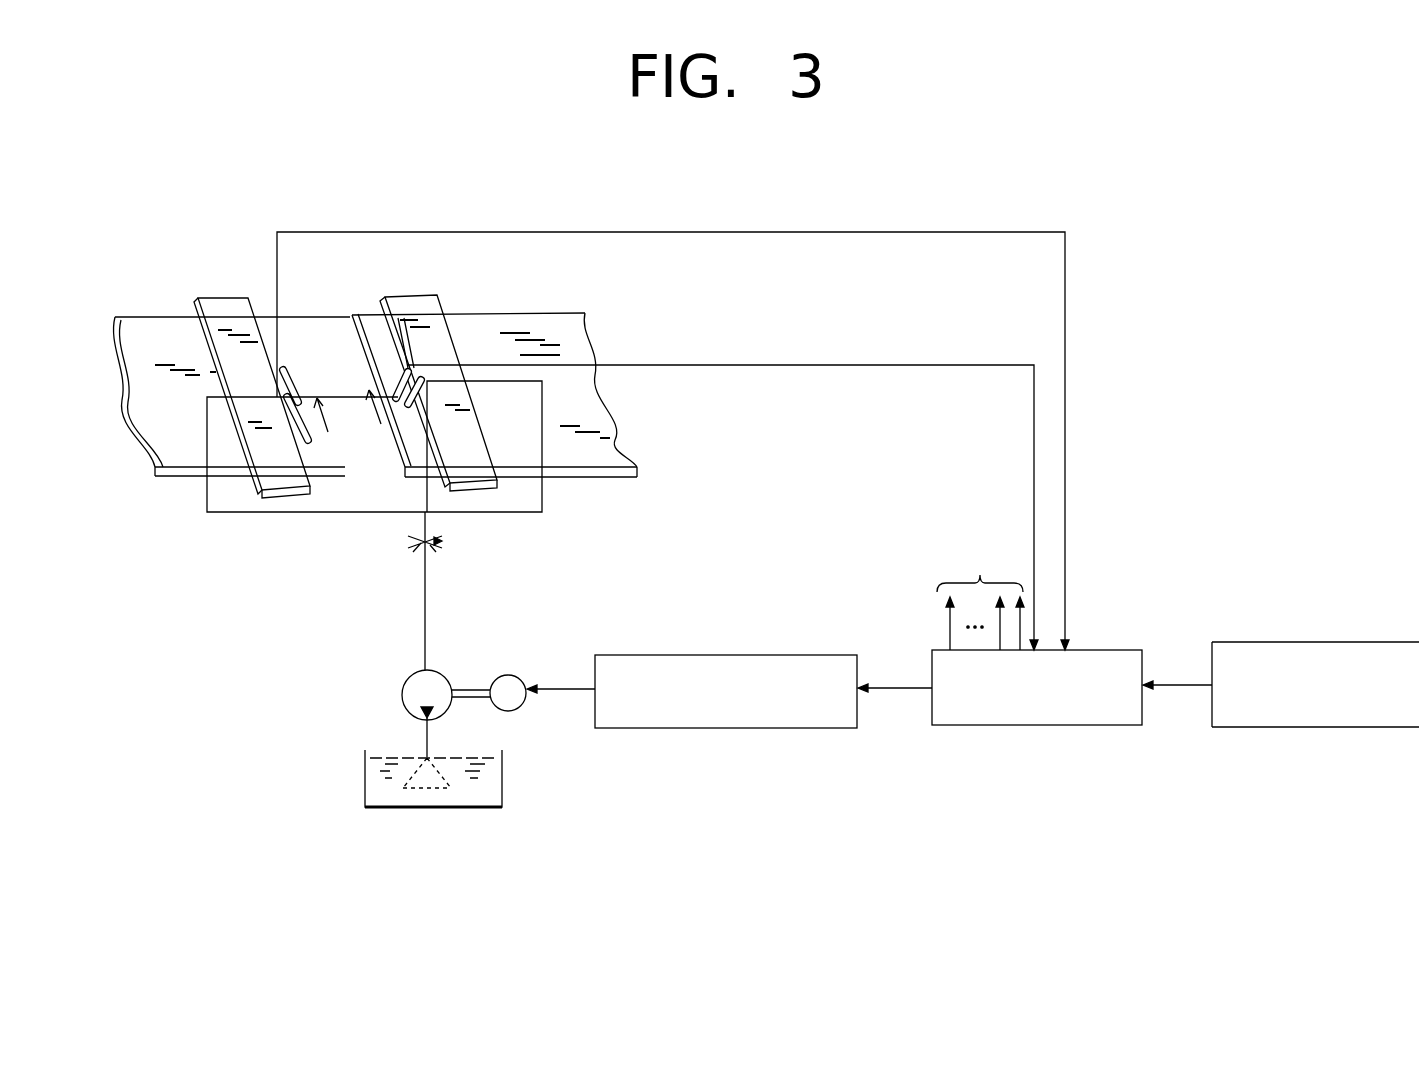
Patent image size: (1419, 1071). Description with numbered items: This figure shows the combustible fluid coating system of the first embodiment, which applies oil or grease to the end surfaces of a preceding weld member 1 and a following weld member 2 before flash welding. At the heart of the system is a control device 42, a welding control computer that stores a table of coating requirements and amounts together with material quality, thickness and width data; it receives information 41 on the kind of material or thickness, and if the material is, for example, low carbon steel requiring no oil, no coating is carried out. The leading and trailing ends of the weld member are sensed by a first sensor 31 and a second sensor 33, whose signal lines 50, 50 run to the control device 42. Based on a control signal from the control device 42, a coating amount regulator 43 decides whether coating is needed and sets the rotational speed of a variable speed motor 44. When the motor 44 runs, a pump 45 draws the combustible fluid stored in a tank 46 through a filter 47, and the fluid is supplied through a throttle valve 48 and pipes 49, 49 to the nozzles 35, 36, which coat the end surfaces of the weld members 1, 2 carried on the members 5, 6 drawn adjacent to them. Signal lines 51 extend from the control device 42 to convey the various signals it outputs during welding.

The preceding weld member 1 is at (562, 313).
The following weld member 2 is at (152, 317).
The first coating bar 5 is at (412, 297).
The second coating bar 6 is at (222, 298).
The first sensor 31 is at (418, 366).
The second sensor 33 is at (286, 372).
The nozzle 35 is at (422, 402).
The nozzle 36 is at (297, 412).
The information on the kind of material 41 is at (1325, 640).
The control device 42 is at (1110, 648).
The coating amount regulator 43 is at (752, 654).
The variable speed motor 44 is at (508, 675).
The pump 45 is at (452, 671).
The tank 46 is at (365, 776).
The filter 47 is at (415, 770).
The throttle valve 48 is at (444, 540).
The pipe 49 is at (544, 481).
The signal line 50 is at (820, 232).
The signal lines 51 is at (980, 590).